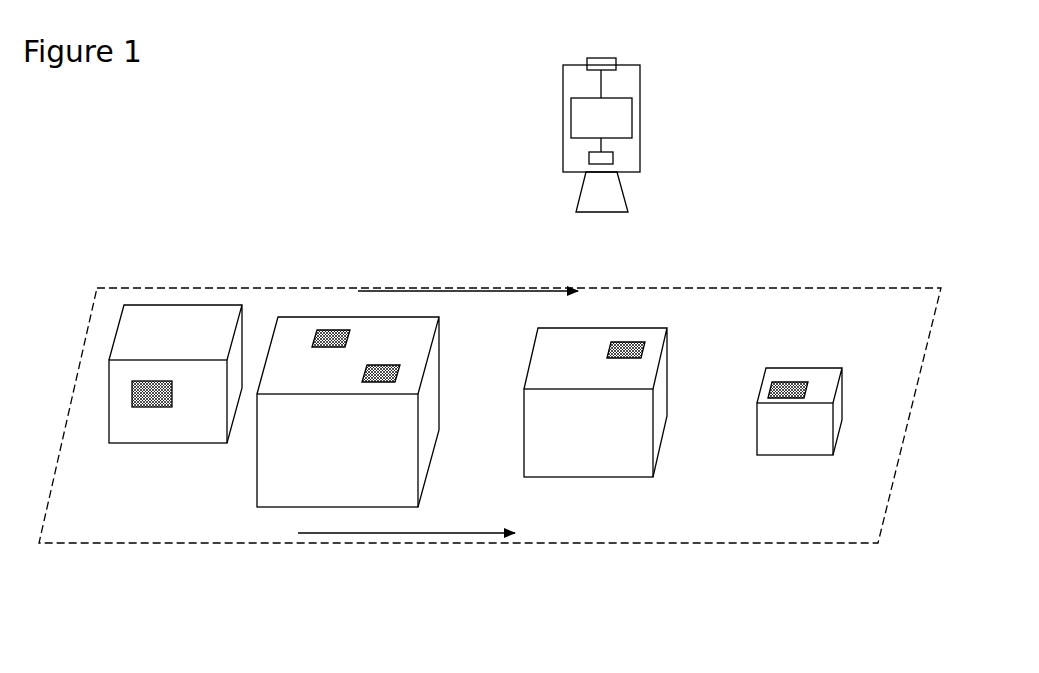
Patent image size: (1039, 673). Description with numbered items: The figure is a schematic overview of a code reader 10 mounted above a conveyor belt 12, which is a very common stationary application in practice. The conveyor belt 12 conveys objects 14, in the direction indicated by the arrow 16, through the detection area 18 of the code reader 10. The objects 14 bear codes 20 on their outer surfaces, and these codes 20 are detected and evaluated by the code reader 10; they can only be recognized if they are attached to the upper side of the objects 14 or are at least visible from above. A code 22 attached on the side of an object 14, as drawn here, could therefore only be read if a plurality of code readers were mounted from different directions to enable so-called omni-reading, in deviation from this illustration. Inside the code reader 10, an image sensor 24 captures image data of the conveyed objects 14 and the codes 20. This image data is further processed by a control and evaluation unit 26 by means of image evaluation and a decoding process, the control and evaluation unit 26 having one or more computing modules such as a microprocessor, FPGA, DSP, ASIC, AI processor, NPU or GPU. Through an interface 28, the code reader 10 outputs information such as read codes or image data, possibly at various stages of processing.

The code reader 10 is at (639, 65).
The conveyor belt 12 is at (847, 543).
The objects 14 is at (277, 483).
The arrow 16 is at (387, 533).
The detection area 18 is at (637, 273).
The codes 20 is at (378, 368).
The code 22 is at (140, 403).
The image sensor 24 is at (593, 163).
The control and evaluation unit 26 is at (625, 138).
The interface 28 is at (597, 62).